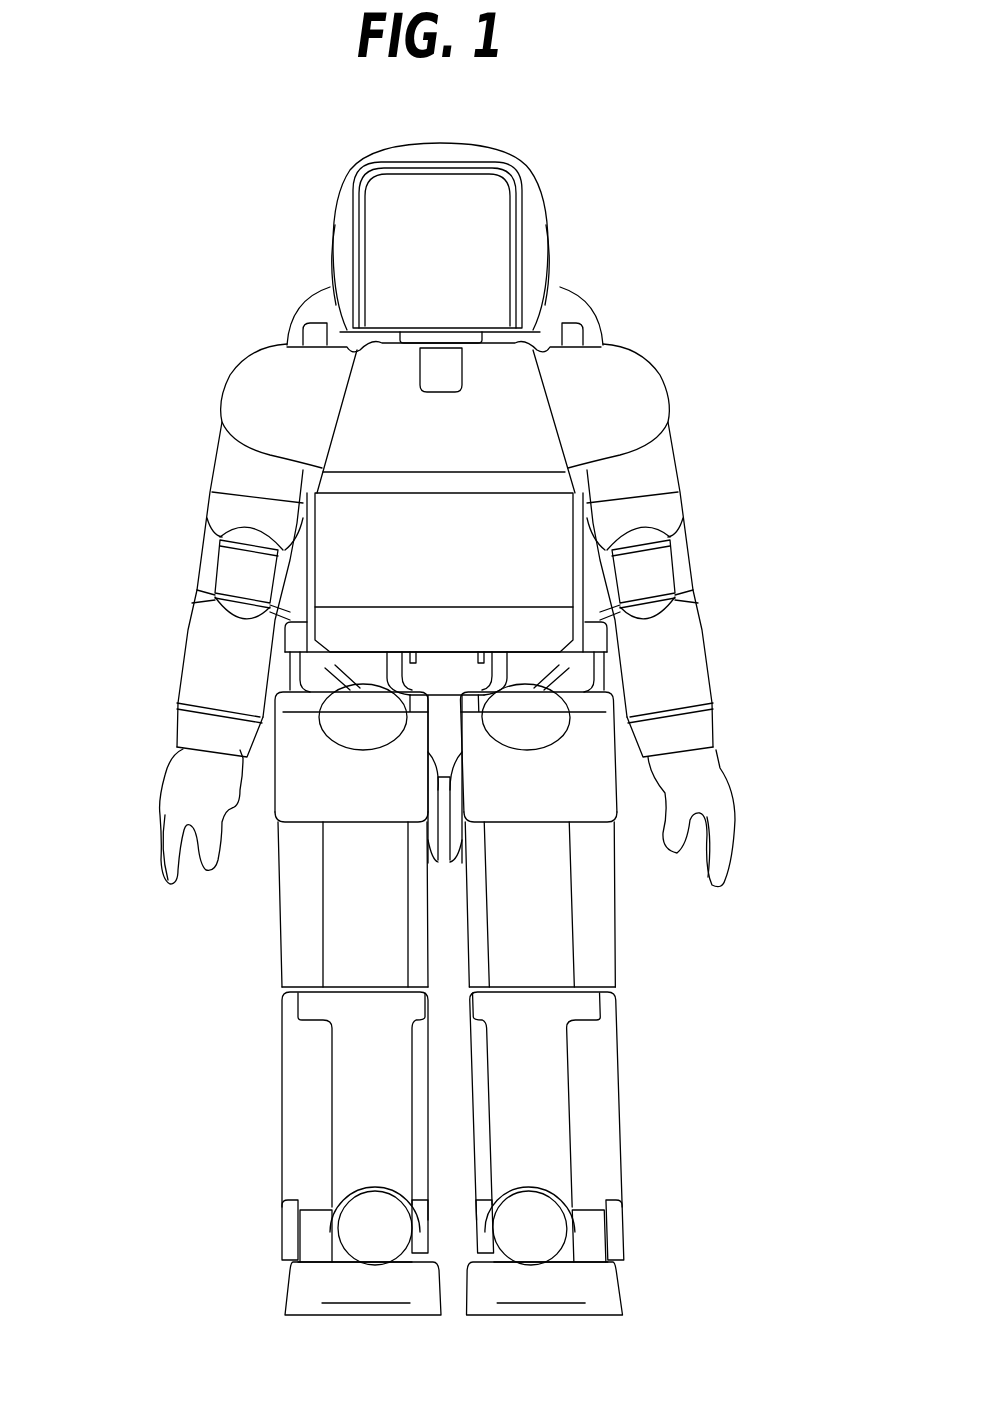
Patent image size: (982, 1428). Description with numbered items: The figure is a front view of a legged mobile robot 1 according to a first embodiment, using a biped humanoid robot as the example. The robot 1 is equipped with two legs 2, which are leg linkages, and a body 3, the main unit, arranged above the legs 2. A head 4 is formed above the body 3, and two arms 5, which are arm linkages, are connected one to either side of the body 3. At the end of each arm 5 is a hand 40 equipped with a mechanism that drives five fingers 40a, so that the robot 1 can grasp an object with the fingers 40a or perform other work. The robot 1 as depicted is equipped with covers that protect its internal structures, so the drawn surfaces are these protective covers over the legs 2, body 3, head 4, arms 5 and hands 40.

The legged mobile robot 1 is at (600, 255).
The leg 2 is at (258, 988).
The body 3 is at (553, 580).
The head 4 is at (520, 168).
The arm 5 is at (190, 438).
The hand 40 is at (160, 772).
The finger 40a is at (736, 831).